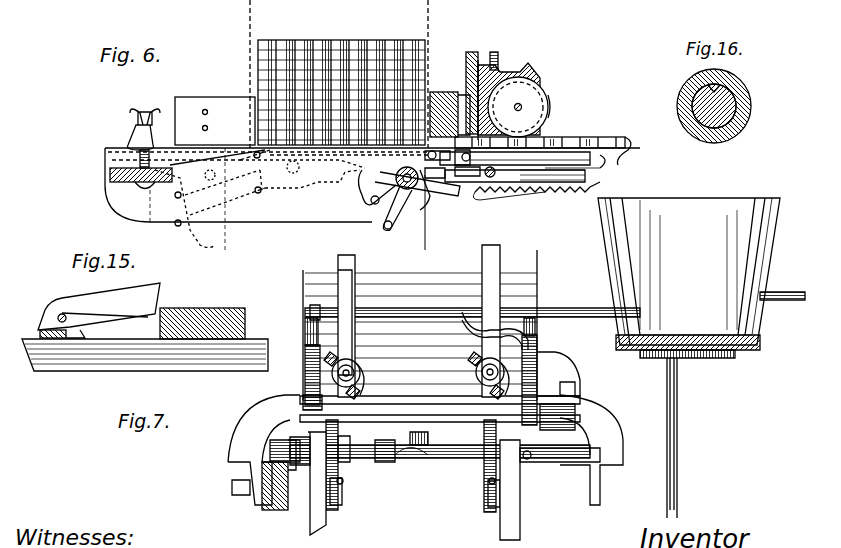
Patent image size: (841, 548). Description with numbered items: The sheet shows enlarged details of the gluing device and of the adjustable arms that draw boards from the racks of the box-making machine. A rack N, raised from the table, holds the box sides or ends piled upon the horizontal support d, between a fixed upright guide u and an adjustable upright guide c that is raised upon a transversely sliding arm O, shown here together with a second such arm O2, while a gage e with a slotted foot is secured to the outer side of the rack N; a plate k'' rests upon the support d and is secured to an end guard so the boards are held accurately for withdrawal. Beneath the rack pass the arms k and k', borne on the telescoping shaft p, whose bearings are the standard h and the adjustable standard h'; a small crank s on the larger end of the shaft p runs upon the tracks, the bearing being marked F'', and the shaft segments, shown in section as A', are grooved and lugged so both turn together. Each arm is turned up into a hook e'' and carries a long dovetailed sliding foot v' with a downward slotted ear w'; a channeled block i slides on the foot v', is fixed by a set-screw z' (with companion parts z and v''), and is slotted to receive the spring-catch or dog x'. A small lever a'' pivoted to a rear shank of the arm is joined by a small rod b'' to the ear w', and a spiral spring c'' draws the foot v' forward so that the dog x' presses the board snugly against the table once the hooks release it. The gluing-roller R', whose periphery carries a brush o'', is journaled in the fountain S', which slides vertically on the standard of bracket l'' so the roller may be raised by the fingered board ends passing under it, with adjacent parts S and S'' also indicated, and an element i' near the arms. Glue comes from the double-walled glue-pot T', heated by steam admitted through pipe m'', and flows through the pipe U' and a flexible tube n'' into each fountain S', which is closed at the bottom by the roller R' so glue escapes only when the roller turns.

In FIG. 6, the adjustable upright guide c is at (341, 78).
In FIG. 7, the adjustable upright guide c is at (503, 321).
In FIG. 6, the rack N is at (372, 199).
In FIG. 7, the rack N is at (425, 450).
In FIG. 6, the transversely sliding arm O is at (105, 156).
In FIG. 7, the transversely sliding arm O is at (568, 380).
In FIG. 6, the housing O2 is at (450, 103).
In FIG. 6, the side or end plate k'' is at (215, 121).
In FIG. 6, the bracket l'' is at (469, 83).
In FIG. 6, the fountain S' is at (509, 91).
In FIG. 6, the gluing-roller R' is at (518, 107).
In FIG. 7, the gluing-roller R' is at (407, 371).
In FIG. 6, the brush o'' is at (558, 105).
In FIG. 6, the hook e'' is at (551, 150).
In FIG. 6, the arm k' is at (584, 168).
In FIG. 7, the arm k' is at (479, 466).
In FIG. 6, the horizontal arm or support d is at (350, 161).
In FIG. 7, the horizontal arm or support d is at (560, 451).
In FIG. 6, the slide v'' is at (414, 157).
In FIG. 6, the channeled block i is at (462, 157).
In FIG. 15, the channeled block i is at (202, 313).
In FIG. 7, the channeled block i is at (366, 448).
In FIG. 6, the sliding foot v' is at (515, 157).
In FIG. 15, the sliding foot v' is at (145, 364).
In FIG. 6, the set-screw z' is at (435, 173).
In FIG. 6, the slide z is at (467, 173).
In FIG. 6, the slotted ear w' is at (515, 176).
In FIG. 7, the slotted ear w' is at (495, 332).
In FIG. 6, the spiral spring c'' is at (536, 195).
In FIG. 6, the small lever a'' is at (400, 186).
In FIG. 6, the small rod b'' is at (406, 201).
In FIG. 6, the standard h' is at (435, 212).
In FIG. 7, the standard h' is at (518, 490).
In FIG. 16, the shaft section A' is at (714, 75).
In FIG. 16, the telescoping shaft p is at (728, 106).
In FIG. 7, the telescoping shaft p is at (430, 453).
In FIG. 15, the dog or spring-catch x' is at (99, 310).
In FIG. 7, the pipe U' is at (470, 327).
In FIG. 7, the fixed upright guide u is at (335, 326).
In FIG. 7, the flexible tube n'' is at (303, 325).
In FIG. 7, the gear S is at (307, 377).
In FIG. 7, the block w is at (416, 366).
In FIG. 7, the gear S'' is at (557, 413).
In FIG. 7, the arm k is at (339, 465).
In FIG. 7, the standard h is at (311, 483).
In FIG. 7, the small crank s is at (293, 448).
In FIG. 7, the gage e is at (422, 443).
In FIG. 7, the block i' is at (473, 444).
In FIG. 7, the bearing F'' is at (279, 480).
In FIG. 7, the glue-pot T' is at (689, 358).
In FIG. 7, the pipe m'' is at (786, 288).